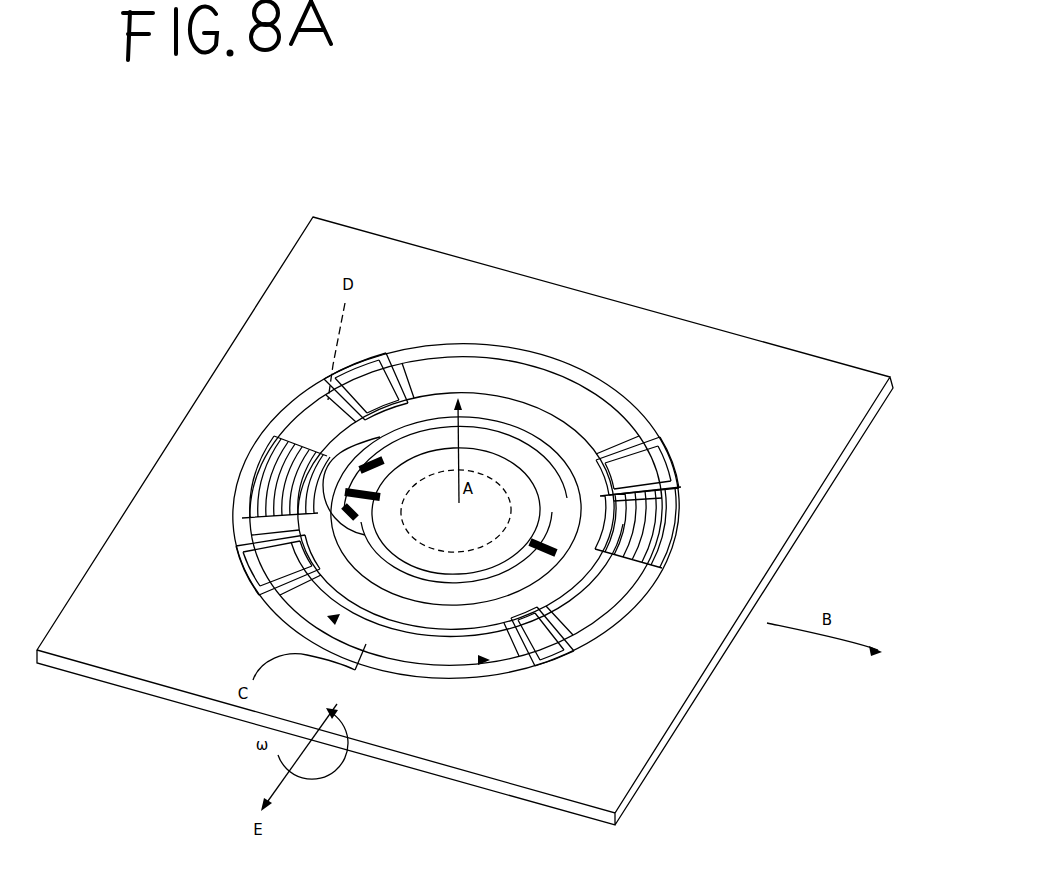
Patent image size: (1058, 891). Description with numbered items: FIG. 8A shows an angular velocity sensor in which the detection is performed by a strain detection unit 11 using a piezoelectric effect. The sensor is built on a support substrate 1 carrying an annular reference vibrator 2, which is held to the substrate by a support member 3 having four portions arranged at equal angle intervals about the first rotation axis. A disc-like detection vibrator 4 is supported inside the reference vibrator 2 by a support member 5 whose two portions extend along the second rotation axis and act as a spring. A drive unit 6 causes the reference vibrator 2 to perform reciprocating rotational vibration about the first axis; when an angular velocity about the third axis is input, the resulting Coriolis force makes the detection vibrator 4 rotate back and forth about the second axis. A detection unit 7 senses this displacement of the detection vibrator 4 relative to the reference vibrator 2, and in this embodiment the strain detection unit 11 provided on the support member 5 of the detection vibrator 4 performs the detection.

The support substrate 1 is at (328, 228).
The reference vibrator 2 is at (443, 397).
The support member 3 is at (397, 352).
The detection vibrator 4 is at (545, 513).
The support member 5 is at (342, 372).
The drive unit 6 is at (252, 440).
The detection unit 7 is at (505, 480).
The strain detection unit 11 is at (300, 548).